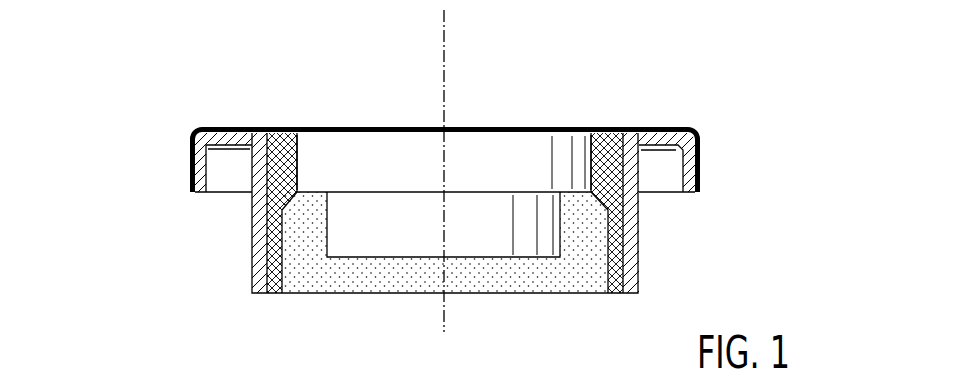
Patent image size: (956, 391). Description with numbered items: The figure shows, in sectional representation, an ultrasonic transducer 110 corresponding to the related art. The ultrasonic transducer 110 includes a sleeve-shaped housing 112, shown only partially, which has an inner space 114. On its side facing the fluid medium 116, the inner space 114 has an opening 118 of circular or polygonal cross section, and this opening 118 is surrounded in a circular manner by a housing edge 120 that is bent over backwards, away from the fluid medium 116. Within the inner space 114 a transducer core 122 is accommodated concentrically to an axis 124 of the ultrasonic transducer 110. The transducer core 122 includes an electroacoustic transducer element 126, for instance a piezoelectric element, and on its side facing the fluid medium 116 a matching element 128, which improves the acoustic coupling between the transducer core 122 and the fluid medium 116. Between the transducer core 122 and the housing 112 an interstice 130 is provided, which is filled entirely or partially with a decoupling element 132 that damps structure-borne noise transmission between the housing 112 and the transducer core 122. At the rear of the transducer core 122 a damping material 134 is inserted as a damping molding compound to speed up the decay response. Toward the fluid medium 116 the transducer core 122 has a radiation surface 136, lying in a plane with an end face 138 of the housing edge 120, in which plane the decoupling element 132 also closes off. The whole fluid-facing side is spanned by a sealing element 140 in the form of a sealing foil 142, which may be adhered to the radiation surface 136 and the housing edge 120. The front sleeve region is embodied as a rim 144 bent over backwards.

The ultrasonic transducer 110 is at (650, 42).
The housing 112 is at (631, 245).
The inner space 114 is at (589, 273).
The fluid medium 116 is at (433, 78).
The opening 118 is at (546, 111).
The housing edge 120 is at (653, 127).
The transducer core 122 is at (348, 144).
The axis 124 is at (447, 25).
The electroacoustic transducer element 126 is at (337, 228).
The matching element 128 is at (310, 173).
The interstice 130 is at (611, 189).
The decoupling element 132 is at (608, 165).
The damping material 134 is at (545, 280).
The radiation surface 136 is at (461, 127).
The end face 138 is at (233, 127).
The sealing element 140 is at (320, 90).
The sealing foil 142 is at (322, 127).
The rim 144 is at (177, 126).